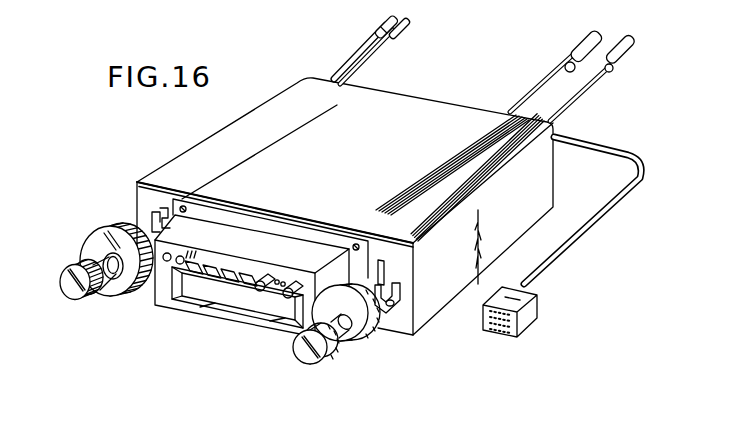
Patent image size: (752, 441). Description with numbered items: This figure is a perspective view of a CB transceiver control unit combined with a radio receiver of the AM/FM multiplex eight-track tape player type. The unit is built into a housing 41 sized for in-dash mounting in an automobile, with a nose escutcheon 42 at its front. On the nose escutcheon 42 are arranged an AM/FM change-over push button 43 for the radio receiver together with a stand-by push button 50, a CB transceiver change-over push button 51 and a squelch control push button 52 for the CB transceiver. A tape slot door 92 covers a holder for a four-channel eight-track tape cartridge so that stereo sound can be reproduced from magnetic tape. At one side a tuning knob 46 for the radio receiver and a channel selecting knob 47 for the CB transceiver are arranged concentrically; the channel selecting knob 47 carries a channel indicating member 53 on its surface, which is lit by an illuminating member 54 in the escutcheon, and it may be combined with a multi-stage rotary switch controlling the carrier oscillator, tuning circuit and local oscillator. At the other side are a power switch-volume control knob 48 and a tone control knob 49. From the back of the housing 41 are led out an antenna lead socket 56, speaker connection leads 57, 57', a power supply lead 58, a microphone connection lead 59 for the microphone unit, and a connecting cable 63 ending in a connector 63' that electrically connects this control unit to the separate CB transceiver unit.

The housing 41 is at (449, 109).
The nose escutcheon 42 is at (270, 236).
The AM/FM change-over push button 43 is at (202, 260).
The tuning knob 46 is at (303, 355).
The channel selecting knob 47 is at (363, 350).
The power switch-volume control knob 48 is at (67, 292).
The tone control knob 49 is at (90, 238).
The stand-by push button 50 is at (218, 263).
The CB transceiver change-over push button 51 is at (247, 270).
The squelch control push button 52 is at (291, 284).
The channel indicating member 53 is at (346, 350).
The illuminating member 54 is at (312, 256).
The antenna lead socket 56 is at (578, 50).
The speaker connection lead 57 is at (405, 38).
The speaker connection lead 57' is at (389, 51).
The power supply lead 58 is at (360, 47).
The microphone connection lead 59 is at (633, 59).
The connecting cable 63 is at (582, 210).
The connector 63' is at (535, 316).
The tape slot door 92 is at (238, 293).